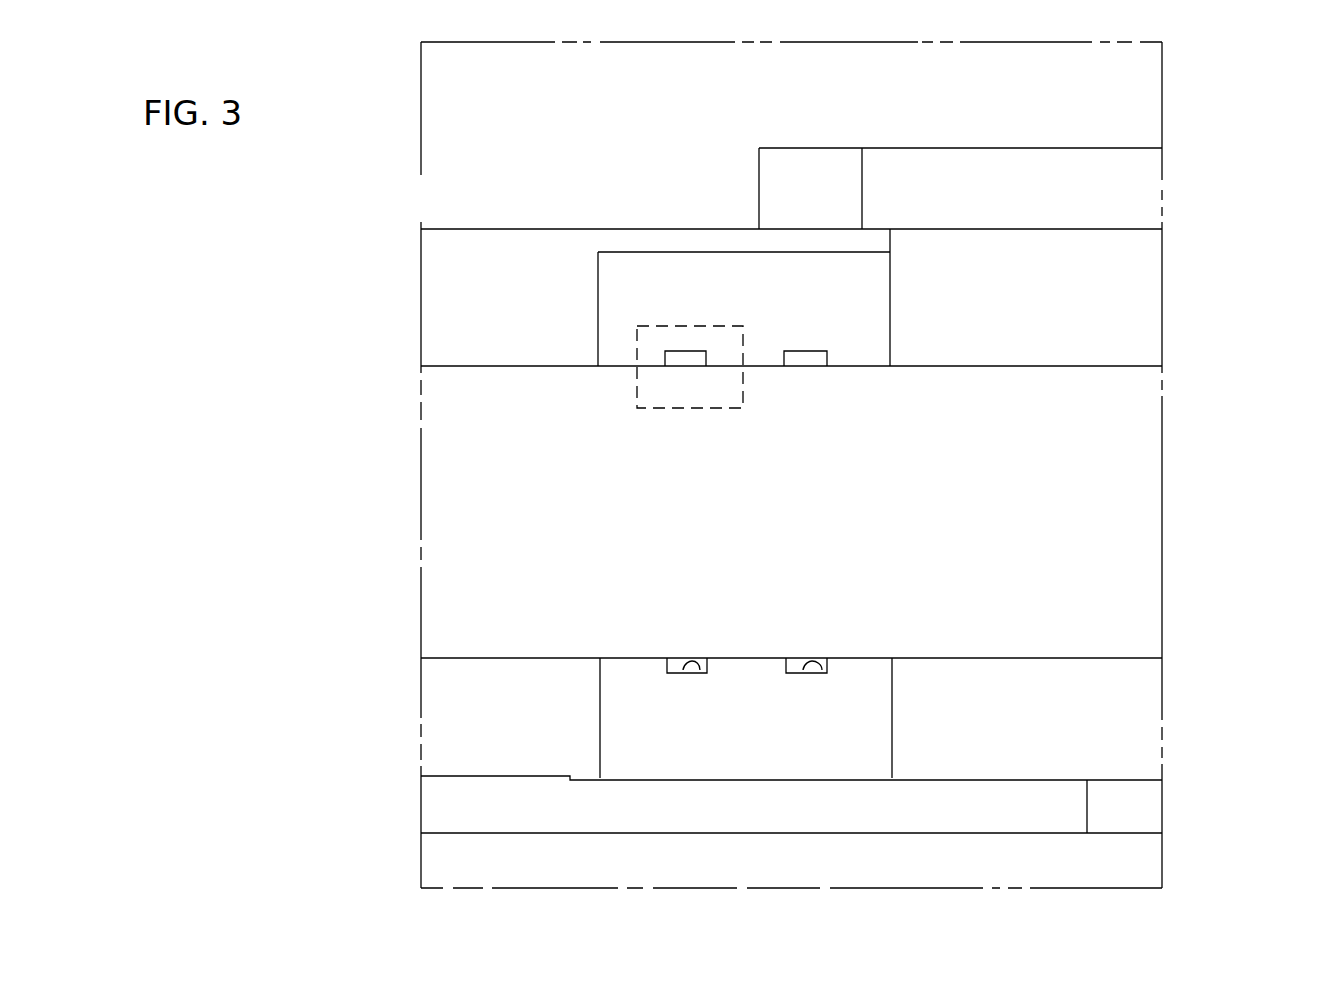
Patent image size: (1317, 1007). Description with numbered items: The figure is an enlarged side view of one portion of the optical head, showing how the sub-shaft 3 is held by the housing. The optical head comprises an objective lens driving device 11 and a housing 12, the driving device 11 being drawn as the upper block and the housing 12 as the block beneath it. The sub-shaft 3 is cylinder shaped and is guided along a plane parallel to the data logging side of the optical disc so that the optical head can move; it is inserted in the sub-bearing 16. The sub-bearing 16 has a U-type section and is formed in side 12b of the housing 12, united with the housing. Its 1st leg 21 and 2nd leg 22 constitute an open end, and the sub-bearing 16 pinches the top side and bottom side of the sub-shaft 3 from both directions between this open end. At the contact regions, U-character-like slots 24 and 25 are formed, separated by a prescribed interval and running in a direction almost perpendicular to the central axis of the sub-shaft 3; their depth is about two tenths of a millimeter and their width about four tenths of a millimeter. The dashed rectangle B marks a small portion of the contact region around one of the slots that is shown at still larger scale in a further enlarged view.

The objective lens driving device 11 is at (1118, 200).
The housing 12 is at (452, 297).
The side of housing 12b is at (1118, 722).
The 1st leg 21 is at (857, 317).
The 2nd leg 22 is at (613, 707).
The sub-shaft 3 is at (1075, 488).
The slot 24 is at (680, 662).
The slot 25 is at (823, 660).
The sub-bearing 16 is at (745, 767).
The enlarged region B is at (637, 394).